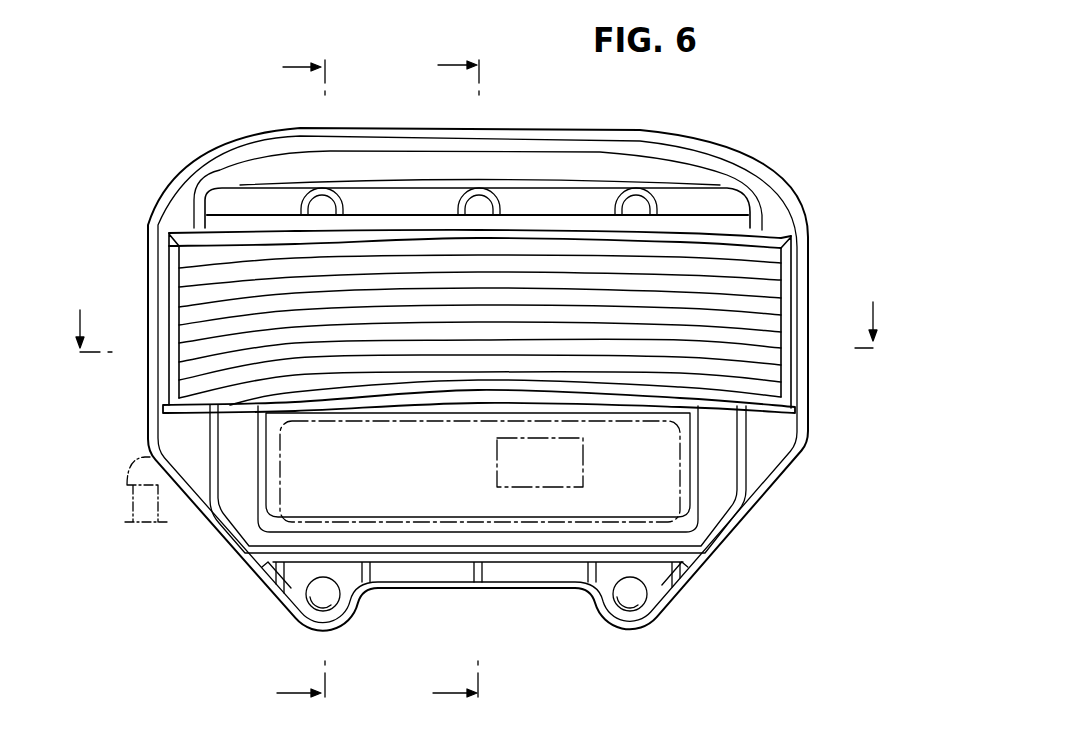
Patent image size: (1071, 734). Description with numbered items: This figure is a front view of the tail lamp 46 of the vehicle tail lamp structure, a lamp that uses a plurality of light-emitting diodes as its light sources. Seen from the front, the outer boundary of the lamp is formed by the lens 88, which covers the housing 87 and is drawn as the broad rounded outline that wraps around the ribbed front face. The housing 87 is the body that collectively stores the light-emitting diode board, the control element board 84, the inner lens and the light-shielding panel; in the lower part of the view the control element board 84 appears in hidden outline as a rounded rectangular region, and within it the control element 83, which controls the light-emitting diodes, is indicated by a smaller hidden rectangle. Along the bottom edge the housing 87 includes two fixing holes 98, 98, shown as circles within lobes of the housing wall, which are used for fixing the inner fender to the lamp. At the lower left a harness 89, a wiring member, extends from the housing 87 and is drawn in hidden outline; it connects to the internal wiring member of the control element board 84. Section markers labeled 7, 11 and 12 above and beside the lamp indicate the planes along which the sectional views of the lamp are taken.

The tail lamp 46 is at (179, 108).
The lens 88 is at (743, 141).
The control element board 84 is at (680, 453).
The control element 83 is at (583, 480).
The housing 87 is at (712, 586).
The fixing holes 98 is at (307, 598).
The harness 89 is at (118, 519).
The section line 7- 7 is at (476, 333).
The section line 11- 11 is at (451, 355).
The section line 12- 12 is at (299, 355).